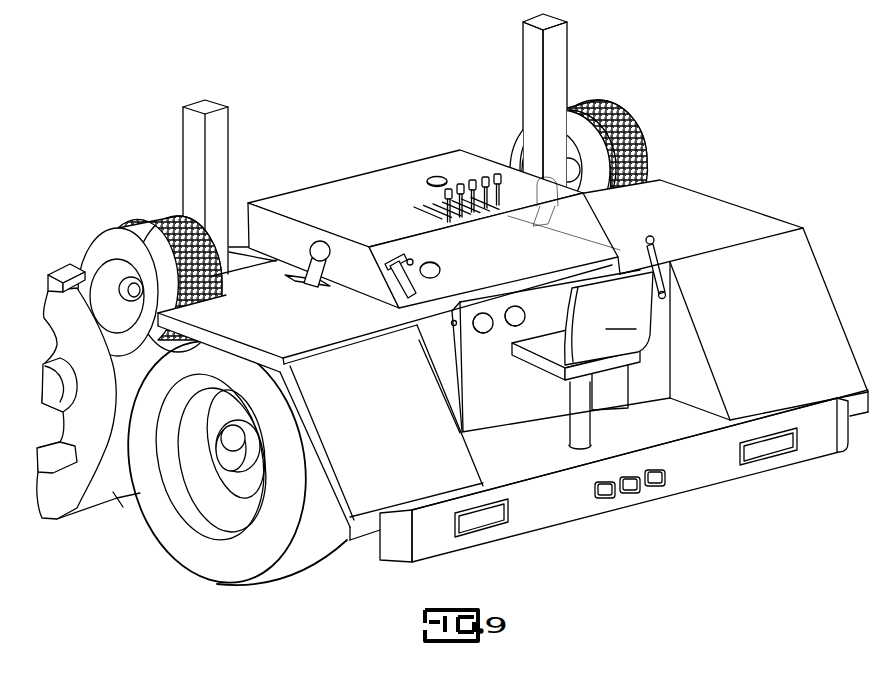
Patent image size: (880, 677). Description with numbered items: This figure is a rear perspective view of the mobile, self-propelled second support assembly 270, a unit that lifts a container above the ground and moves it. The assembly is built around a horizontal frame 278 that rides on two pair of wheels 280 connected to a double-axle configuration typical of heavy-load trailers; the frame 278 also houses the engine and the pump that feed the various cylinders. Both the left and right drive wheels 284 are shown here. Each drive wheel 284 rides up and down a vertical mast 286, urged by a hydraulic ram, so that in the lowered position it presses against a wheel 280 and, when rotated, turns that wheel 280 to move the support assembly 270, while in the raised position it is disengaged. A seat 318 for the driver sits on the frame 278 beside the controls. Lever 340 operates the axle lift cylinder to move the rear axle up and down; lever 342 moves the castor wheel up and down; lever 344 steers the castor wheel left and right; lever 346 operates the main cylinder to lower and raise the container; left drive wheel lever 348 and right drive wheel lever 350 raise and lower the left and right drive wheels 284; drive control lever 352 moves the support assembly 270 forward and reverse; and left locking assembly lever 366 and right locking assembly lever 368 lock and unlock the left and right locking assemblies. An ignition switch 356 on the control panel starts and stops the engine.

The second support assembly 270 is at (705, 147).
The frame 278 is at (713, 211).
The wheels 280 is at (163, 519).
The drive wheels 284 is at (160, 220).
The vertical masts 286 is at (205, 98).
The seat 318 is at (582, 360).
The lever 340 is at (656, 243).
The lever 342 is at (413, 260).
The lever 344 is at (497, 174).
The lever 346 is at (458, 184).
The left drive wheel lever 348 is at (445, 190).
The right drive wheel lever 350 is at (481, 180).
The drive control lever 352 is at (427, 210).
The ignition switch 356 is at (457, 327).
The left locking assembly lever 366 is at (323, 241).
The right locking assembly lever 368 is at (560, 208).